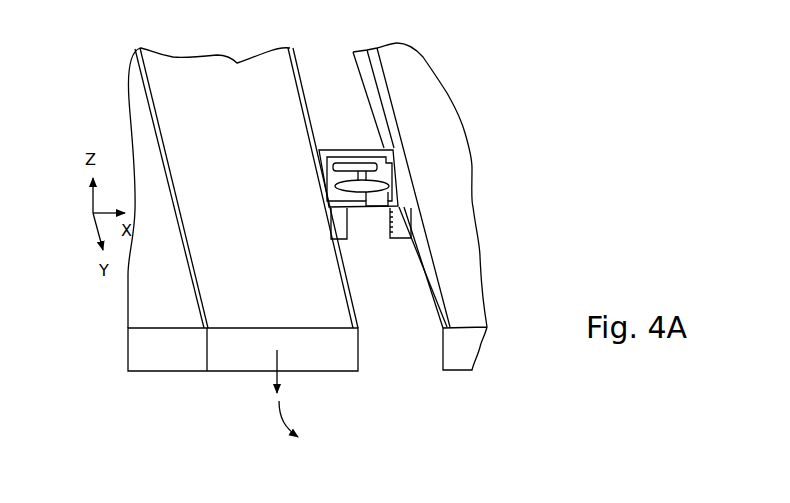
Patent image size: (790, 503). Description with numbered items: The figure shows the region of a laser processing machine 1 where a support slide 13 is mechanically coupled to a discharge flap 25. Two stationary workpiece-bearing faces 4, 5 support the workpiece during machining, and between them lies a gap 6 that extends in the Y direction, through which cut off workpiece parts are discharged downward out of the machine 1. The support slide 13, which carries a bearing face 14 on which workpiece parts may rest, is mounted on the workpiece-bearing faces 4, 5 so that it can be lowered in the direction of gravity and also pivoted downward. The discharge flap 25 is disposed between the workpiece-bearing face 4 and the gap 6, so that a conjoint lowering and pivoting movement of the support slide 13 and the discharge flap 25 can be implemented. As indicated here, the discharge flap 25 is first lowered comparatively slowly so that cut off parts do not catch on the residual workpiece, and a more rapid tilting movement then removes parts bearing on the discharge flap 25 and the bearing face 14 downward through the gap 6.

The machine 1 is at (112, 91).
The workpiece-bearing face 4 is at (153, 280).
The workpiece-bearing face 5 is at (452, 205).
The gap 6 is at (342, 97).
The support slide 13 is at (418, 167).
The bearing face 14 is at (380, 198).
The discharge flap 25 is at (297, 352).